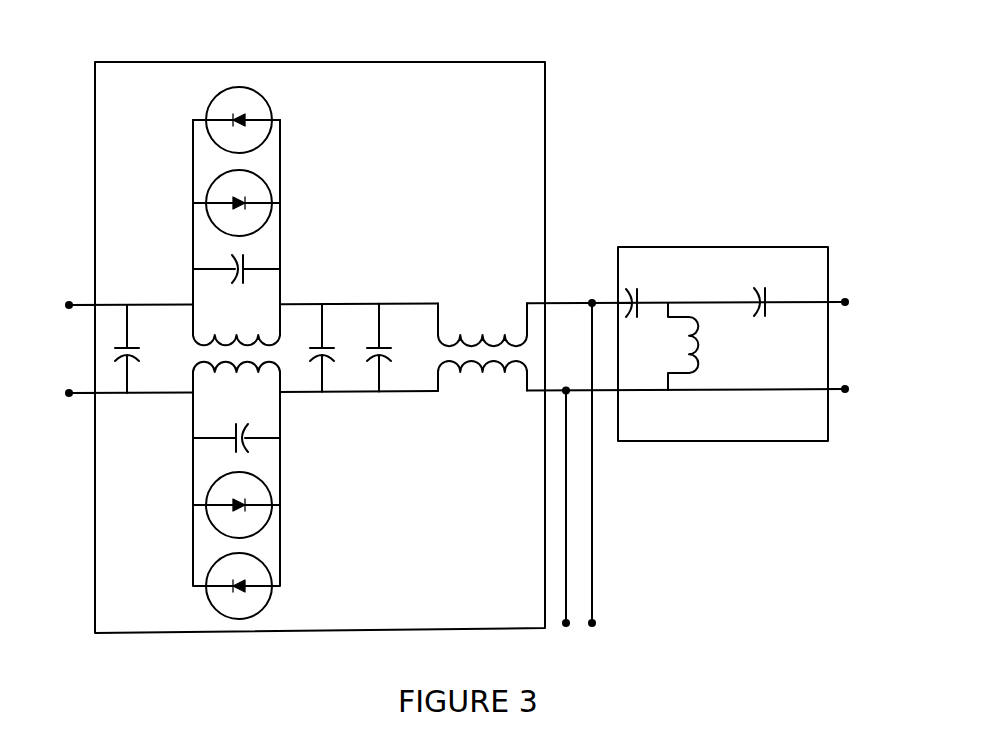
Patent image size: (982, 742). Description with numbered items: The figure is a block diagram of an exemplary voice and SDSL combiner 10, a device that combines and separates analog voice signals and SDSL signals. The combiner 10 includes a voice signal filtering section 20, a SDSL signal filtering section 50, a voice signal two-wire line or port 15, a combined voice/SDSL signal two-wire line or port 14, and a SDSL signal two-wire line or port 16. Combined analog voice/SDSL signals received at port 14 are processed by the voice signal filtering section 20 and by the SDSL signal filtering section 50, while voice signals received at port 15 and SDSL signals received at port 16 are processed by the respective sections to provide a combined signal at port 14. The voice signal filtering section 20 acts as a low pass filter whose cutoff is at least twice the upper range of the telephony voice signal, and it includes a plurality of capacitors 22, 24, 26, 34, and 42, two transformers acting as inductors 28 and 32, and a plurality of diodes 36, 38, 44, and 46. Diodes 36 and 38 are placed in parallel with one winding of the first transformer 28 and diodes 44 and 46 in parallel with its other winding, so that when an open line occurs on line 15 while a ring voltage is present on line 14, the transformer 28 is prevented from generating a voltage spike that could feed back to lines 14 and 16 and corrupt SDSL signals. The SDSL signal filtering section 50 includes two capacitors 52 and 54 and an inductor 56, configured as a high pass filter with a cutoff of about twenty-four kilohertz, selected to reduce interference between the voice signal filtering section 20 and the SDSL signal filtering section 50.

The voice and SDSL combiner 10 is at (718, 505).
The combined voice/SDSL signal two-wire line or port 14 is at (582, 620).
The voice signal two-wire line or port 15 is at (79, 351).
The SDSL signal two-wire line or port 16 is at (832, 348).
The voice signal filtering section 20 is at (340, 62).
The capacitor 22 is at (133, 348).
The capacitor 24 is at (328, 348).
The capacitor 26 is at (385, 348).
The first transformer 28 is at (287, 359).
The transformer 32 is at (507, 330).
The capacitor 34 is at (262, 268).
The diode 36 is at (214, 180).
The diode 38 is at (262, 95).
The capacitor 42 is at (266, 440).
The diode 44 is at (218, 486).
The diode 46 is at (262, 566).
The SDSL signal filtering section 50 is at (712, 247).
The capacitor 52 is at (633, 290).
The capacitor 54 is at (761, 290).
The inductor 56 is at (700, 352).